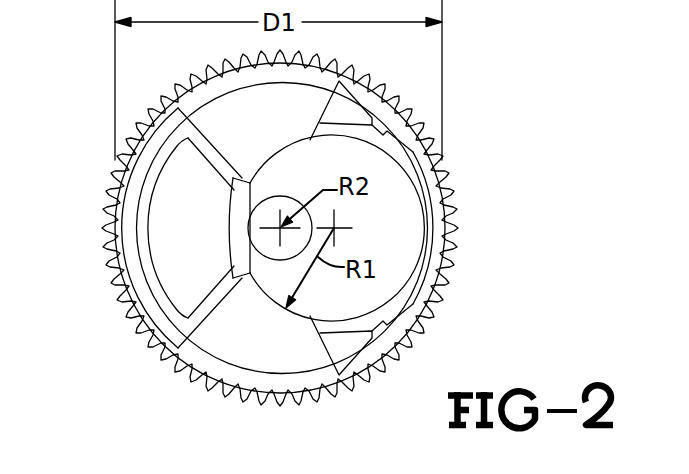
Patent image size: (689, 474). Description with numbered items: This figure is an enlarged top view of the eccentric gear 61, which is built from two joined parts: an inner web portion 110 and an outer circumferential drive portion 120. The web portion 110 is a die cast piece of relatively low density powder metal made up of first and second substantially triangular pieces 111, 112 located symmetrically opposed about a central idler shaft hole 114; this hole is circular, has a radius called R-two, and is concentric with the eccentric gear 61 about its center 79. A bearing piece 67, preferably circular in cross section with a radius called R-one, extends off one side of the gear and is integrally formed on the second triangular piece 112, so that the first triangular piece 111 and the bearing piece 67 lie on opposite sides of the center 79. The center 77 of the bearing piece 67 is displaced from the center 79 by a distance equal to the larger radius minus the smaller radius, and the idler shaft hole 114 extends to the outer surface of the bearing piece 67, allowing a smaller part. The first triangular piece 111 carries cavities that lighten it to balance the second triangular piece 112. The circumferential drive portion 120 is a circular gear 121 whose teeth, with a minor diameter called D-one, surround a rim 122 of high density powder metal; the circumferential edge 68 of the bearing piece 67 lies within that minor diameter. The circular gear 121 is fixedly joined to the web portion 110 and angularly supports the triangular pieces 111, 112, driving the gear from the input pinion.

The eccentric gear 61 is at (128, 362).
The bearing piece 67 is at (392, 276).
The circumferential edge 68 is at (248, 212).
The center of the bearing piece 77 is at (344, 228).
The center of the eccentric gear 79 is at (278, 213).
The web portion 110 is at (405, 253).
The first triangular piece 111 is at (202, 135).
The second triangular piece 112 is at (337, 325).
The idler shaft hole 114 is at (258, 246).
The circumferential drive portion 120 is at (440, 242).
The circular gear 121 is at (453, 265).
The rim 122 is at (190, 352).